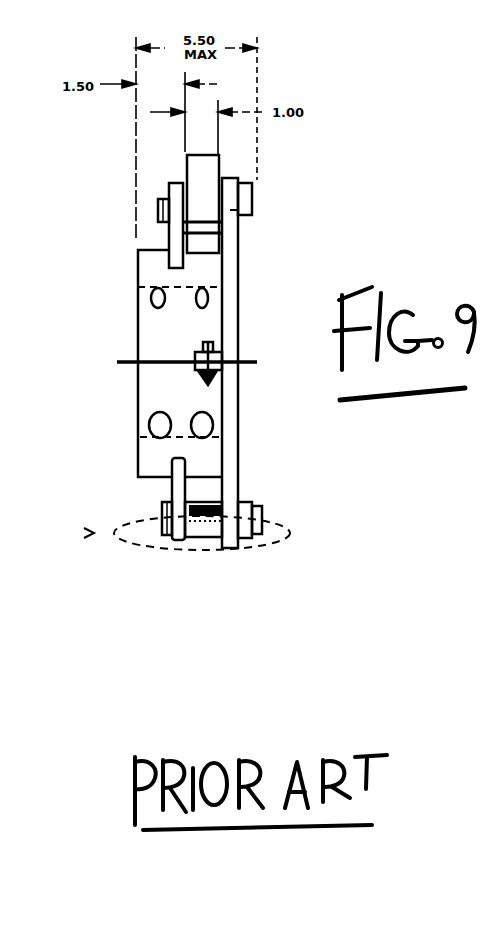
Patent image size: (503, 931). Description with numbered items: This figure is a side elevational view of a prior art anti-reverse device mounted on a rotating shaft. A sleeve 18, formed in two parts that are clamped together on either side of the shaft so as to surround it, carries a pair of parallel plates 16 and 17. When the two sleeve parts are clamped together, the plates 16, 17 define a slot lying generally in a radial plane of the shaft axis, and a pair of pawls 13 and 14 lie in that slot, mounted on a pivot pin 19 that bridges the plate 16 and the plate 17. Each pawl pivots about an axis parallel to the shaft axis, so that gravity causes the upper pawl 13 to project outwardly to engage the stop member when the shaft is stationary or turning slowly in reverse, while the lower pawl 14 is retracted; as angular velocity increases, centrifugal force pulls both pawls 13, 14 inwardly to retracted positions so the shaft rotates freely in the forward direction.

The pawl 13 is at (202, 177).
The pawl 14 is at (212, 537).
The plate 16 is at (175, 234).
The plate 17 is at (243, 213).
The sleeve 18 is at (153, 323).
The pivot pin 19 is at (252, 200).